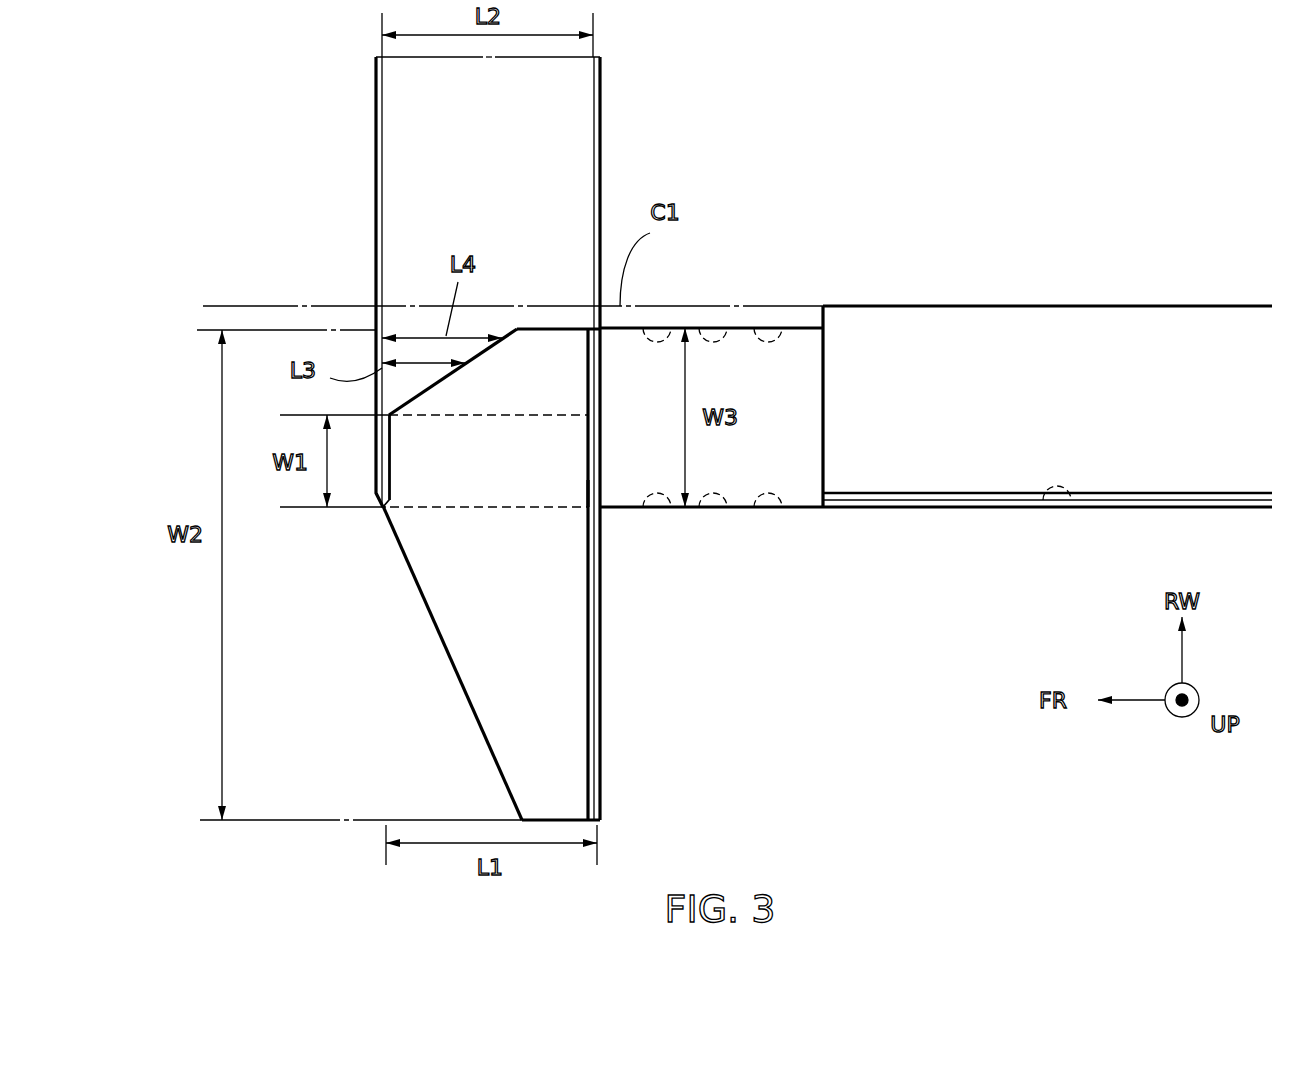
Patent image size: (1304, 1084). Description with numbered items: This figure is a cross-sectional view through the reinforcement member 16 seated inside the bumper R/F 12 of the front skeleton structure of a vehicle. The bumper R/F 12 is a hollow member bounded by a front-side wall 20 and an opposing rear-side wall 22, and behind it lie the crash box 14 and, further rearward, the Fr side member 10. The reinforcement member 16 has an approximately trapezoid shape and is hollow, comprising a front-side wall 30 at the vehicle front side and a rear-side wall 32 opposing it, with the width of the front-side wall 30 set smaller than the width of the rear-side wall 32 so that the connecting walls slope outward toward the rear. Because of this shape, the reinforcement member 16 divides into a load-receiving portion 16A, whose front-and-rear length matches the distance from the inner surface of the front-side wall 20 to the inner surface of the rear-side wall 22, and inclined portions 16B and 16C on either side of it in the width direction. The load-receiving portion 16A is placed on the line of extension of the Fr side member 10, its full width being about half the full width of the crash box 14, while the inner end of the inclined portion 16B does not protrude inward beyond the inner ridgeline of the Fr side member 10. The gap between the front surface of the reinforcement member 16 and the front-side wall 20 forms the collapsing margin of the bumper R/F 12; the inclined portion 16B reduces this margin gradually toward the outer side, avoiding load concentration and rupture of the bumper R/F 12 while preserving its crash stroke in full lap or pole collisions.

The Fr side member 10 is at (906, 306).
The bumper R/F 12 is at (468, 438).
The crash box 14 is at (740, 328).
The reinforcement member 16 is at (552, 529).
The load-receiving portion 16A is at (528, 497).
The inclined portion 16B is at (543, 358).
The inclined portion 16C is at (540, 610).
The front-side wall 20 is at (376, 252).
The rear-side wall 22 is at (601, 105).
The front-side wall 30 is at (392, 502).
The rear-side wall 32 is at (588, 493).